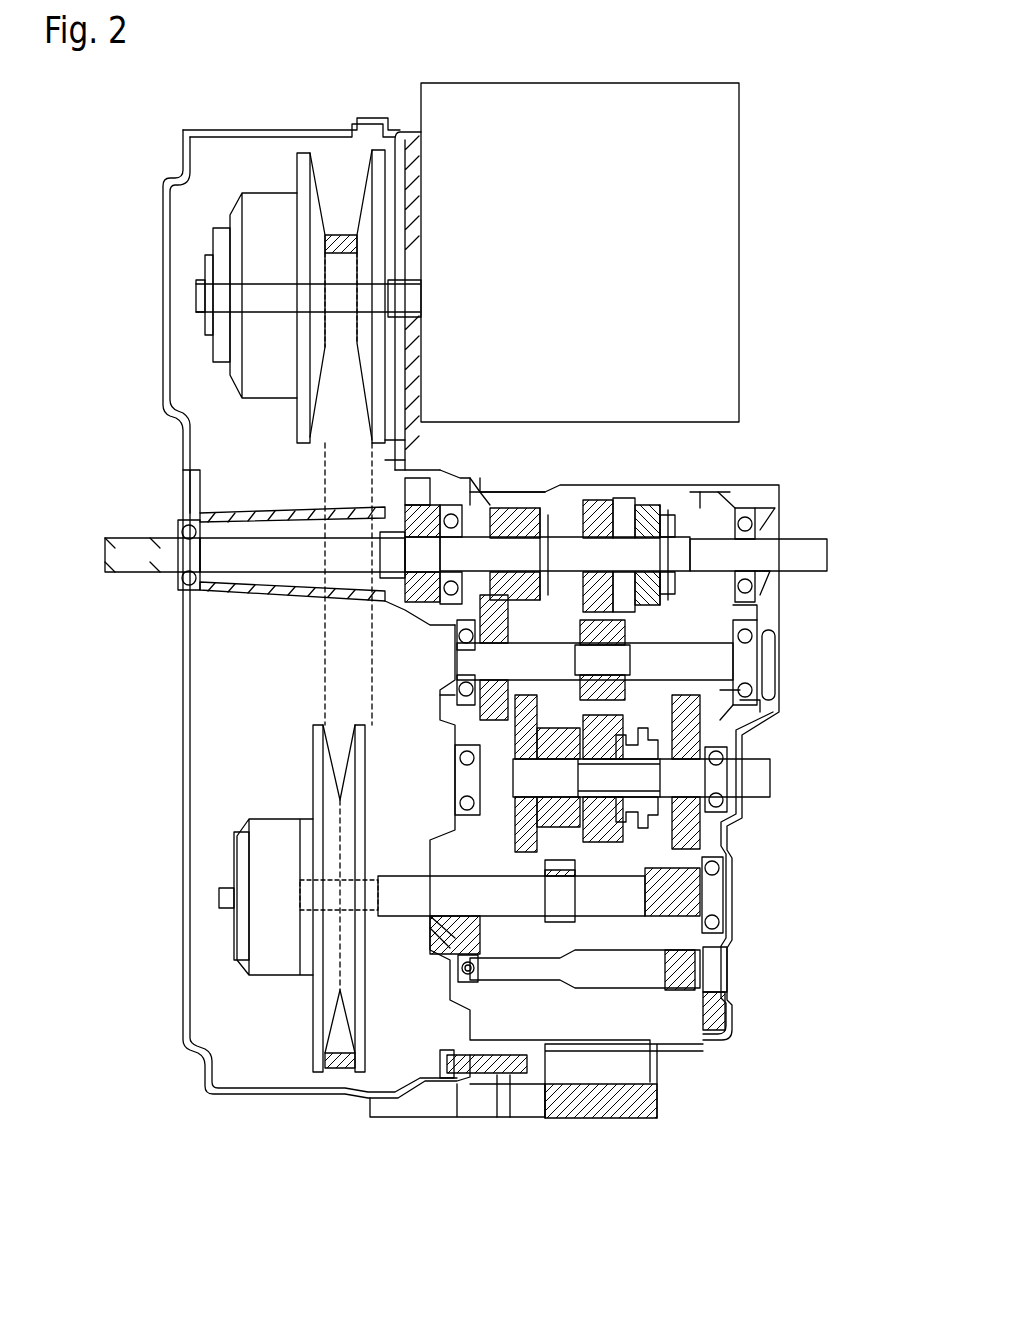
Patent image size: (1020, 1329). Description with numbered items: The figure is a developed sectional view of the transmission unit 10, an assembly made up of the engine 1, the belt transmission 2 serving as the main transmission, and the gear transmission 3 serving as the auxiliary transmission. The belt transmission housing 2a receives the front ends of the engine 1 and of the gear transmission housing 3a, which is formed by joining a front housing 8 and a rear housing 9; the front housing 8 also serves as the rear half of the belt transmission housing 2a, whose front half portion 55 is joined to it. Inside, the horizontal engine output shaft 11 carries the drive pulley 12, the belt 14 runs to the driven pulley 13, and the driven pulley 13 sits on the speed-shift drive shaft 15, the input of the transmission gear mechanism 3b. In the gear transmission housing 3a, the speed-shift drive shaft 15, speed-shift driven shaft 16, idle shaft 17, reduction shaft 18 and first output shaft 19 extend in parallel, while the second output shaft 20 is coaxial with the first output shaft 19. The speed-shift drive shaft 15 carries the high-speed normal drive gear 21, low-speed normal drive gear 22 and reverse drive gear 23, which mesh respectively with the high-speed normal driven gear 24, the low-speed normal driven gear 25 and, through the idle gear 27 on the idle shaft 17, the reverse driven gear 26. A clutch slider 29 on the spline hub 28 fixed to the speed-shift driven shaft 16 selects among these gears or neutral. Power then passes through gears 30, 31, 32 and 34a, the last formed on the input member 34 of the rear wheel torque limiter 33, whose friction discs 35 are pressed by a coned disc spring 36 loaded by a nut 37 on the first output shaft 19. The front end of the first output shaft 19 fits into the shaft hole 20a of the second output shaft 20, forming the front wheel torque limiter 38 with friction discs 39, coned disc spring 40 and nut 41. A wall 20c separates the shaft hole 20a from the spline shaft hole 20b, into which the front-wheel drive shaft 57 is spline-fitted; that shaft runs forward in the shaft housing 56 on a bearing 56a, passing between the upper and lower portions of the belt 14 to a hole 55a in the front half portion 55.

The engine 1 is at (600, 252).
The belt transmission 2 is at (155, 898).
The belt transmission housing 2a is at (400, 1140).
The gear transmission 3 is at (752, 963).
The gear transmission housing 3a is at (532, 1140).
The transmission gear mechanism 3b is at (735, 720).
The front housing 8 is at (428, 1100).
The rear housing 9 is at (545, 1106).
The transmission unit 10 is at (786, 353).
The engine output shaft 11 is at (400, 300).
The drive pulley 12 is at (302, 153).
The driven pulley 13 is at (315, 760).
The belt 14 is at (322, 688).
The speed-shift drive shaft 15 is at (733, 893).
The speed-shift driven shaft 16 is at (730, 790).
The idle shaft 17 is at (623, 982).
The reduction shaft 18 is at (673, 652).
The first output shaft 19 is at (787, 555).
The second output shaft 20 is at (383, 532).
The shaft hole 20a is at (452, 610).
The spline shaft hole 20b is at (393, 596).
The wall 20c is at (398, 516).
The high-speed normal drive gear 21 is at (482, 922).
The low-speed normal drive gear 22 is at (572, 917).
The reverse drive gear 23 is at (672, 880).
The high-speed normal driven gear 24 is at (520, 832).
The low-speed normal driven gear 25 is at (568, 872).
The reverse driven gear 26 is at (690, 720).
The idle gear 27 is at (697, 1038).
The spline hub 28 is at (625, 842).
The clutch slider 29 is at (640, 742).
The gear 30 is at (455, 750).
The gear 31 is at (505, 608).
The gear 32 is at (585, 620).
The rear wheel torque limiter 33 is at (641, 505).
The input member 34 is at (645, 603).
The gear 34a is at (598, 497).
The friction discs 35 is at (656, 510).
The coned disc spring 36 is at (673, 520).
The nut 37 is at (673, 580).
The front wheel torque limiter 38 is at (493, 502).
The friction discs 39 is at (514, 471).
The coned disc spring 40 is at (514, 525).
The nut 41 is at (545, 572).
The front half portion 55 is at (167, 240).
The hole 55a is at (196, 500).
The shaft housing 56 is at (286, 515).
The bearing 56a is at (181, 586).
The front-wheel drive shaft 57 is at (170, 540).